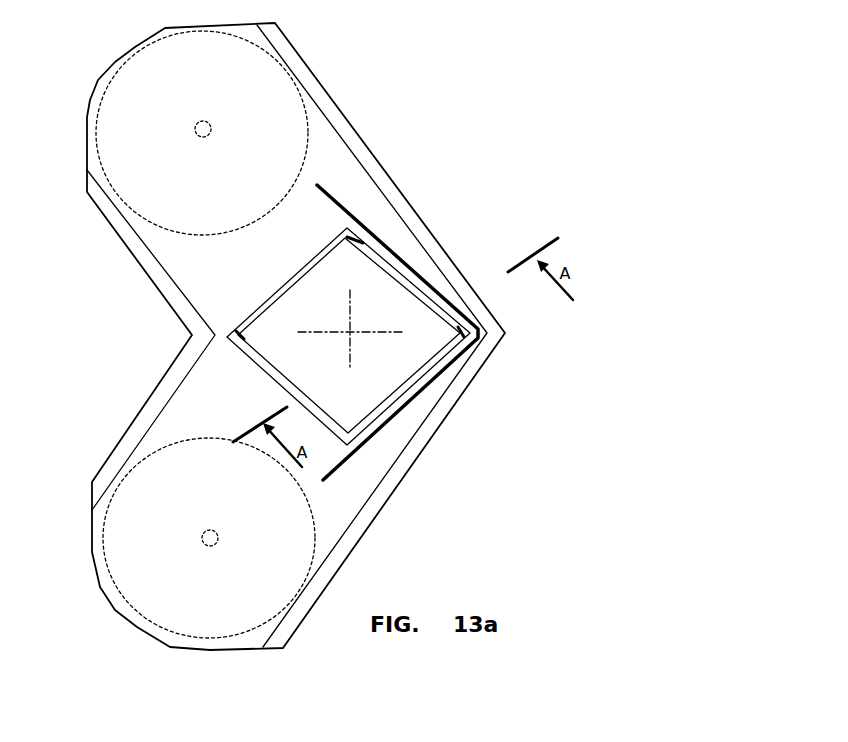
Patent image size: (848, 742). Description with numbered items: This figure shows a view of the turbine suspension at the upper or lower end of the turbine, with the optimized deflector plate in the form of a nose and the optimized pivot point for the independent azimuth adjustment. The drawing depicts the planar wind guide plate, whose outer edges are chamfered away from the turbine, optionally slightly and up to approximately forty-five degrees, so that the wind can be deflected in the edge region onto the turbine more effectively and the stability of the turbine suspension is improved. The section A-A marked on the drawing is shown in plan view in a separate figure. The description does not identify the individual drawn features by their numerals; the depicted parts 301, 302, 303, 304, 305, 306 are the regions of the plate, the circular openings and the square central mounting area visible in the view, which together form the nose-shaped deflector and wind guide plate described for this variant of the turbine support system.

The circular cavity 301 is at (252, 42).
The peripheral rim 302 is at (95, 190).
The body plate 303 is at (327, 145).
The square frame 304 is at (237, 340).
The retaining rib 305 is at (433, 393).
The central aperture 306 is at (353, 337).